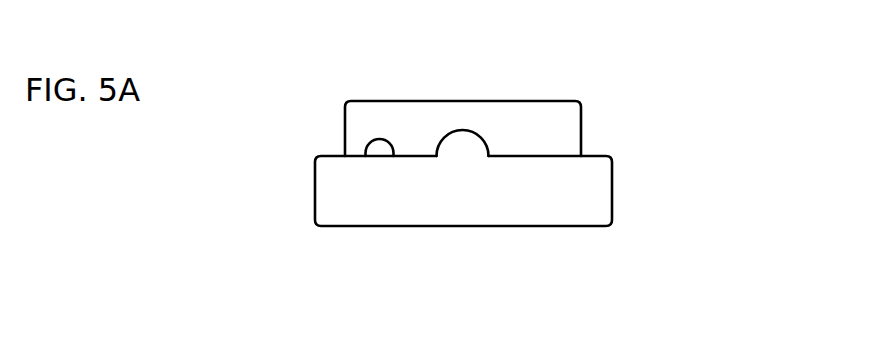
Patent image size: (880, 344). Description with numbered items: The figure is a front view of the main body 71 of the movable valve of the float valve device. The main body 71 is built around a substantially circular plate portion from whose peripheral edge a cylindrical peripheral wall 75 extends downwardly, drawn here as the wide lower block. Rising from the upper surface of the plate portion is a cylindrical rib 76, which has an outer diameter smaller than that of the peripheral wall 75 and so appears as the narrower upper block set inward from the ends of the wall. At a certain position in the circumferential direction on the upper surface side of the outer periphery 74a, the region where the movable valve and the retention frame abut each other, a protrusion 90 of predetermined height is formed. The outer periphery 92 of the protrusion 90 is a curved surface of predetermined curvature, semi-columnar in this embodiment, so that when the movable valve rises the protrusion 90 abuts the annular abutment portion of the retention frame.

The main body 71 is at (622, 119).
The outer periphery 74a is at (392, 152).
The cylindrical peripheral wall 75 is at (597, 193).
The cylindrical rib 76 is at (535, 110).
The protrusion 90 is at (460, 143).
The outer periphery of the protrusion 92 is at (458, 133).